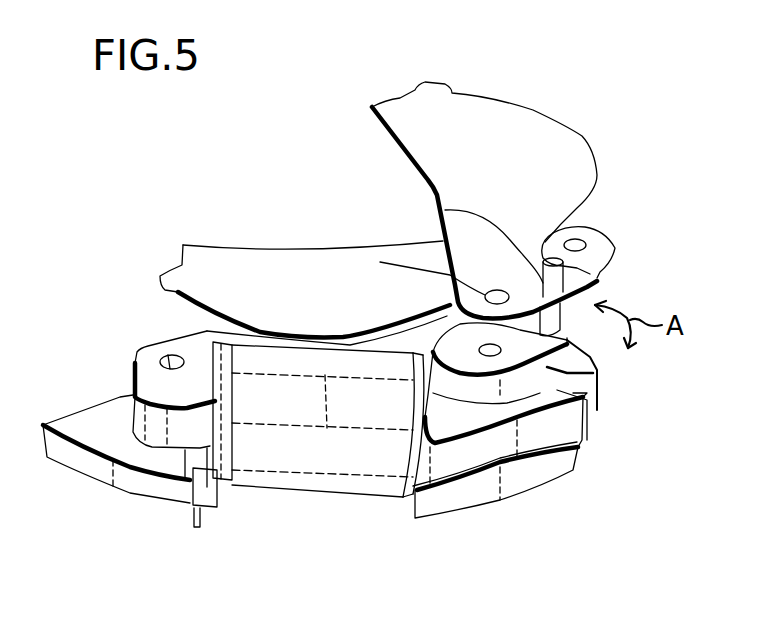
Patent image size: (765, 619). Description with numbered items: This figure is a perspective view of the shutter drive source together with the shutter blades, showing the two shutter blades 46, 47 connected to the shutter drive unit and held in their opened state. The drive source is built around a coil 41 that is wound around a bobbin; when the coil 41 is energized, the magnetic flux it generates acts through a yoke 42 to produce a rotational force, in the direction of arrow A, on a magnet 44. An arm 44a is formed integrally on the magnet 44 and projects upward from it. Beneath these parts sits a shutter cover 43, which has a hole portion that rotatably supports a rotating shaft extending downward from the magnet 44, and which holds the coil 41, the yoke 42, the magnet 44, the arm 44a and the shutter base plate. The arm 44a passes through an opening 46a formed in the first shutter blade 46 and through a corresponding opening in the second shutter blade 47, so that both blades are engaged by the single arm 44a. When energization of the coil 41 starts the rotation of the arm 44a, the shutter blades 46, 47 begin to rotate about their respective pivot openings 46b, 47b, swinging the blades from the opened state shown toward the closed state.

The coil 41 is at (343, 458).
The yoke 42 is at (180, 343).
The shutter cover 43 is at (482, 498).
The magnet 44 is at (523, 390).
The arm 44a is at (578, 268).
The shutter blade 46 is at (560, 142).
The opening 46a is at (443, 212).
The opening 46b is at (380, 262).
The shutter blade 47 is at (230, 257).
The opening 47b is at (578, 242).